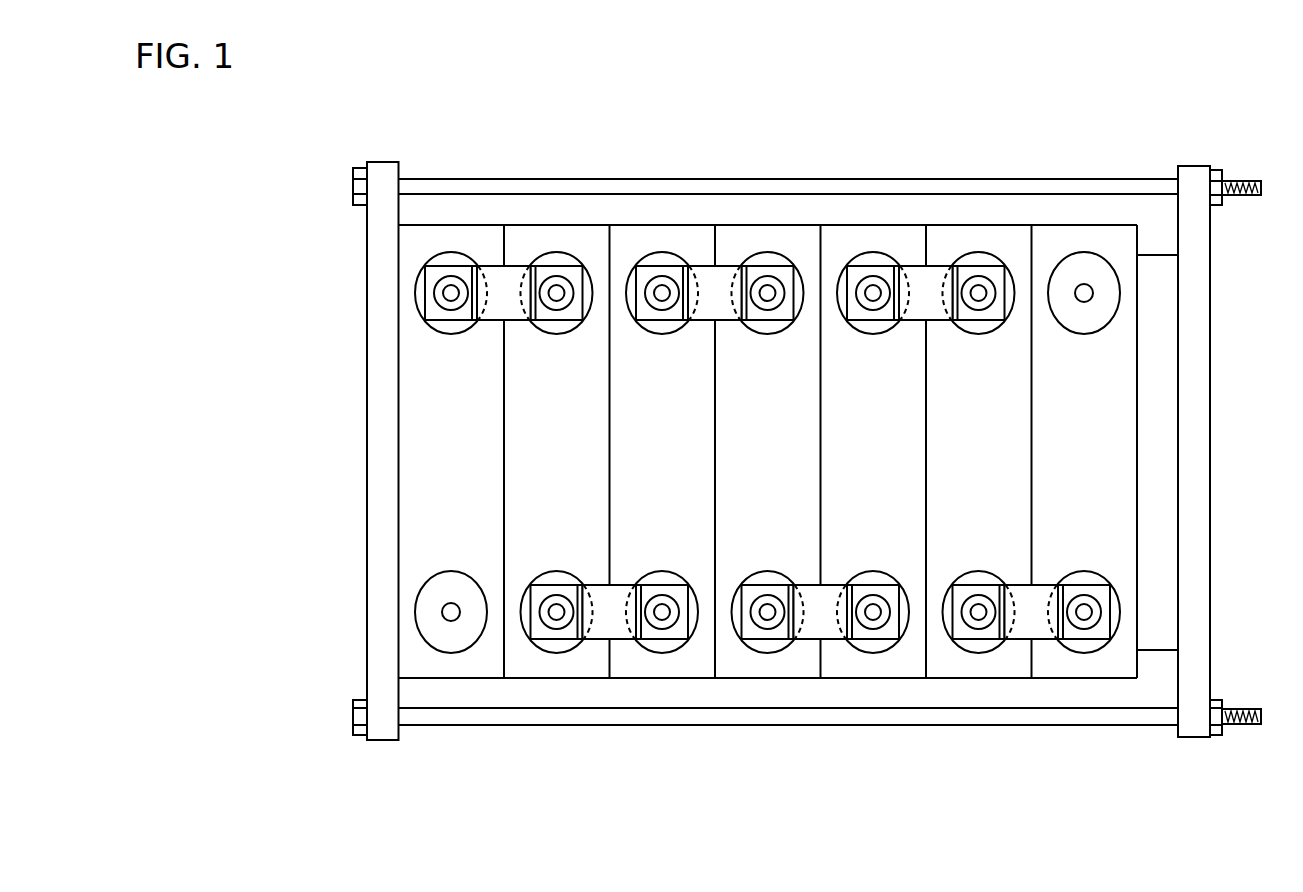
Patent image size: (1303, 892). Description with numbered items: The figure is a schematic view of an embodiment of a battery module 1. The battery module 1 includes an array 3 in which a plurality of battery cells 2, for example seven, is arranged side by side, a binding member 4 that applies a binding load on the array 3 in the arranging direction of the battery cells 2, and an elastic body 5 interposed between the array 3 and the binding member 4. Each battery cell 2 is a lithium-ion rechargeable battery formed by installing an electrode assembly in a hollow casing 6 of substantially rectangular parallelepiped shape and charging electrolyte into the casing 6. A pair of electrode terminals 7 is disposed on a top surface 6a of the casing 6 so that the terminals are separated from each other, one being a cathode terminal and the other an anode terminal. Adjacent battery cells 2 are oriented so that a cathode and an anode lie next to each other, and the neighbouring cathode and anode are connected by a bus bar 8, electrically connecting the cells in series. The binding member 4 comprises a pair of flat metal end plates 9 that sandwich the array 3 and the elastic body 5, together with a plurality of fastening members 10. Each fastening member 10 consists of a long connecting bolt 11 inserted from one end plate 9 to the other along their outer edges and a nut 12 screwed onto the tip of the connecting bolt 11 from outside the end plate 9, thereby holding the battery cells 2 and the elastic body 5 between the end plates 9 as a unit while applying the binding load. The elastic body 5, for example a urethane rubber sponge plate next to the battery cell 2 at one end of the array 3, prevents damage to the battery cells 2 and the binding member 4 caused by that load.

The battery module 1 is at (358, 110).
The battery cell 2 is at (553, 237).
The array 3 is at (1108, 210).
The binding member 4 is at (358, 755).
The elastic body 5 is at (1156, 633).
The casing 6 is at (577, 680).
The top surface 6a is at (526, 668).
The electrode terminal 7 is at (575, 334).
The bus bar 8 is at (491, 312).
The end plate 9 is at (378, 483).
The fastening member 10 is at (810, 452).
The connecting bolt 11 is at (441, 190).
The nut 12 is at (1215, 168).